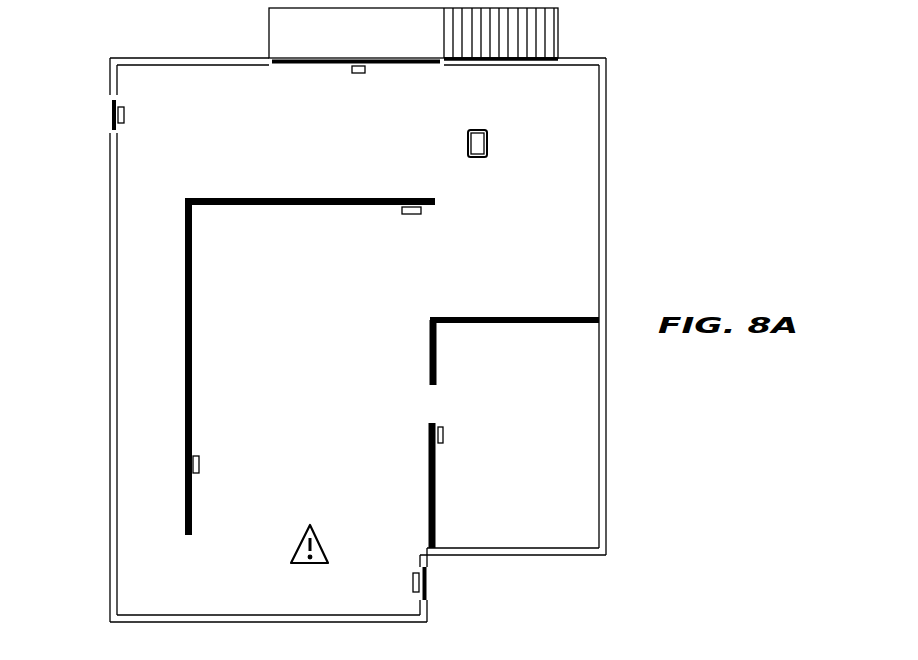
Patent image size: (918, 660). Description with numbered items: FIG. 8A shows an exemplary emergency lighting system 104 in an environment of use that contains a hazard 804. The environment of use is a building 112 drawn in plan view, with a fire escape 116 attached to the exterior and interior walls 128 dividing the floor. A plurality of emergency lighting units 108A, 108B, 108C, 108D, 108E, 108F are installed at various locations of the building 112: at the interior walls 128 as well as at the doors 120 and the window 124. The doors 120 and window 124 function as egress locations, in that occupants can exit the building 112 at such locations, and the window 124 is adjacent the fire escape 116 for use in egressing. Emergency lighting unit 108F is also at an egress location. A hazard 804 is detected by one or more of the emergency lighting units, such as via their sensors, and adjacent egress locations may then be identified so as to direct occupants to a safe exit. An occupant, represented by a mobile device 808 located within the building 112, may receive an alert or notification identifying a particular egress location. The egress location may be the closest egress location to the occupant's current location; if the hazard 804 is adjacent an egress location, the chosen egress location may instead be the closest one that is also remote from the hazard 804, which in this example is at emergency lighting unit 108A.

The emergency lighting system 104 is at (80, 298).
The building 112 is at (222, 57).
The fire escape 116 is at (375, 44).
The door 120 is at (112, 114).
The window 124 is at (425, 63).
The interior wall 128 is at (268, 198).
The emergency lighting unit 108A is at (356, 74).
The emergency lighting unit 108B is at (126, 115).
The emergency lighting unit 108C is at (412, 215).
The emergency lighting unit 108D is at (444, 435).
The emergency lighting unit 108E is at (200, 465).
The emergency lighting unit 108F is at (412, 582).
The hazard 804 is at (305, 566).
The mobile device 808 is at (488, 143).